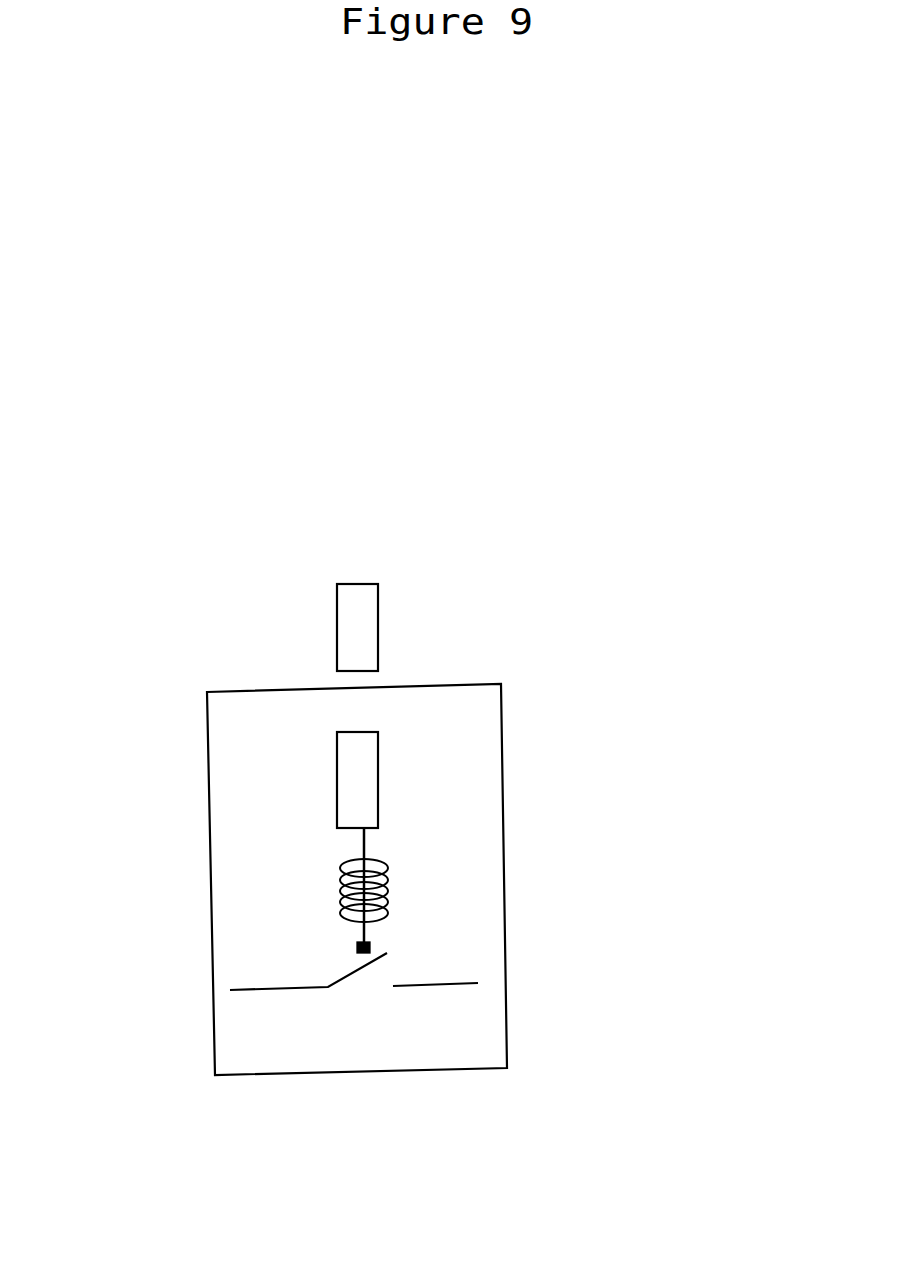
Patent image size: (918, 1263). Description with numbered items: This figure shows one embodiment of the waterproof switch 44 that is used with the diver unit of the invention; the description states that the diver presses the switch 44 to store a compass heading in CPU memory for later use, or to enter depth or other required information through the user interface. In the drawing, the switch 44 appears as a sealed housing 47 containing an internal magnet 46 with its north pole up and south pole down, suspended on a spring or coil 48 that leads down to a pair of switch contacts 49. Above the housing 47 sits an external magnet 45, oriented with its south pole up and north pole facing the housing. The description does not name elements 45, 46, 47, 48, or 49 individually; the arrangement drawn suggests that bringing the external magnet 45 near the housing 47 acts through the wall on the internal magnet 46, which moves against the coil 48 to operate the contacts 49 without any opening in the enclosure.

The waterproof switch 44 is at (634, 726).
The external magnet 45 is at (365, 627).
The internal magnet 46 is at (348, 777).
The housing 47 is at (209, 867).
The spring / coil 48 is at (390, 882).
The switch contacts 49 is at (390, 1009).